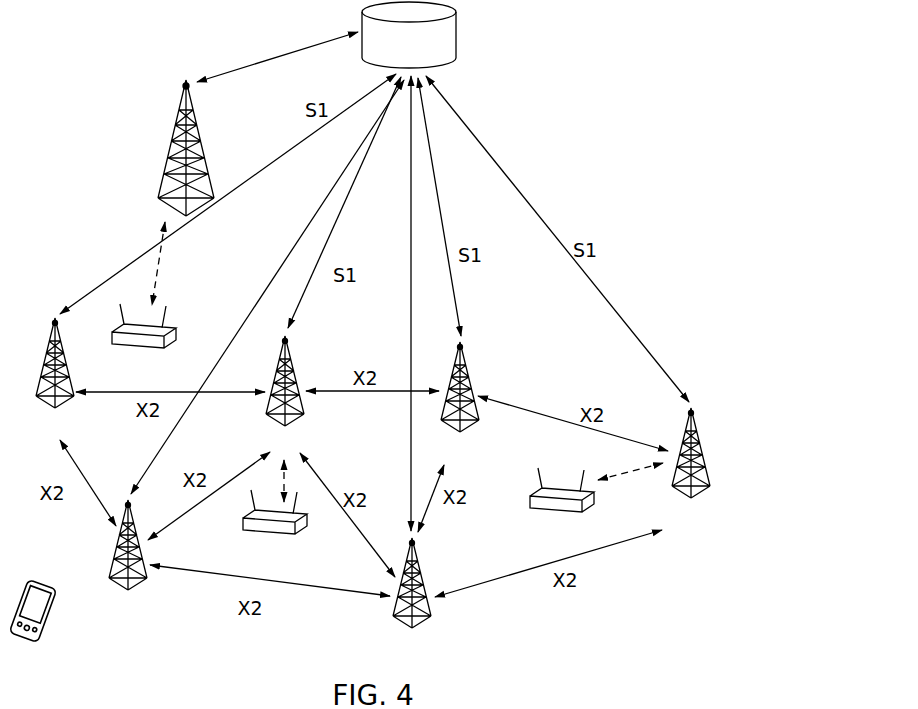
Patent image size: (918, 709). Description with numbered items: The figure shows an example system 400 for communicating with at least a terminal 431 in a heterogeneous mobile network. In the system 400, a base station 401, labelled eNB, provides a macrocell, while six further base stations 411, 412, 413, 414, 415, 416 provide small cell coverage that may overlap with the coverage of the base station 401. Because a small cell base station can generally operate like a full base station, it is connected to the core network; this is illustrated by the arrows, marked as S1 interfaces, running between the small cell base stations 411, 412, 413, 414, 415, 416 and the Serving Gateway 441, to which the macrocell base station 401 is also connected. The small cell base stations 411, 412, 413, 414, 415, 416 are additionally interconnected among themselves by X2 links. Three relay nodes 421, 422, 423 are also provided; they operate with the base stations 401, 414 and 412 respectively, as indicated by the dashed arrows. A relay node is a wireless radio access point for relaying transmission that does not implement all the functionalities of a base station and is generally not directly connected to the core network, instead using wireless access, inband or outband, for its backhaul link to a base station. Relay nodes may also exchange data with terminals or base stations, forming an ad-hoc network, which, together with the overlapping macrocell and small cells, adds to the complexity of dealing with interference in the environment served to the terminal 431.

The system 400 is at (580, 118).
The base station 401 is at (200, 140).
The base station 411 is at (50, 345).
The base station 412 is at (295, 380).
The base station 413 is at (470, 385).
The base station 414 is at (700, 450).
The base station 415 is at (420, 575).
The base station 416 is at (112, 568).
The relay node 421 is at (178, 332).
The relay node 422 is at (562, 484).
The relay node 423 is at (305, 532).
The terminal 431 is at (52, 622).
The Serving Gateway 441 is at (457, 22).